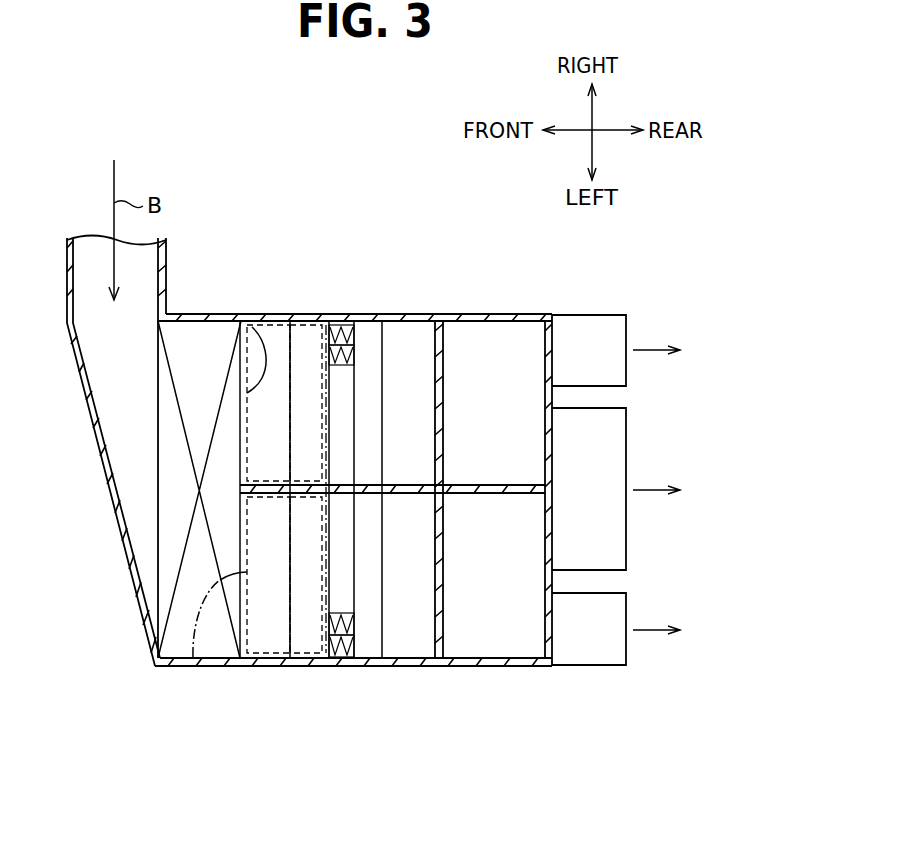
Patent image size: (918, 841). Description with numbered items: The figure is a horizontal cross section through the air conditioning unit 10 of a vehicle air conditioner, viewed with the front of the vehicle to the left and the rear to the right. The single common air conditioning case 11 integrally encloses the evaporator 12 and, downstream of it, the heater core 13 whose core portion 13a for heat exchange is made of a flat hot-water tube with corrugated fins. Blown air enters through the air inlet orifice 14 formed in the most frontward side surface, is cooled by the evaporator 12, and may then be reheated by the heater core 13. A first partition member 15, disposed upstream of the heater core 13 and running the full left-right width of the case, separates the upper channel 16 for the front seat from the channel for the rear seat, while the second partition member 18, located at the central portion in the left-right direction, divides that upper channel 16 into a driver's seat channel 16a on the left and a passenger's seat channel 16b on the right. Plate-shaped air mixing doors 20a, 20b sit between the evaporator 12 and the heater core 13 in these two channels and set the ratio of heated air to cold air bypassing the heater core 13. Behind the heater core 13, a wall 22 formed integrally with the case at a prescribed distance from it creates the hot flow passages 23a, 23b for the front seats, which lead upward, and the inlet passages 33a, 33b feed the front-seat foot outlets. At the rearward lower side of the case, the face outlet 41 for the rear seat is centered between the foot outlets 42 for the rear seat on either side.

The air conditioning unit 10 is at (384, 672).
The air conditioning case 11 is at (433, 660).
The evaporator 12 is at (185, 342).
The heater core 13 is at (360, 345).
The core portion 13a is at (337, 393).
The air inlet orifice 14 is at (117, 323).
The first partition member 15 is at (290, 377).
The upper channel for the front seat 16 is at (301, 564).
The driver's seat channel 16a is at (268, 612).
The passenger's seat channel 16b is at (267, 447).
The second partition member 18 is at (508, 415).
The air mixing door for the driver's seat 20a is at (194, 657).
The air mixing door for the passenger's seat 20b is at (252, 325).
The wall 22 is at (453, 540).
The hot flow passage for the front seats 23a is at (408, 585).
The hot flow passage for the front seats 23b is at (395, 487).
The inlet passage of the foot outlet for the front seats 33a is at (485, 612).
The inlet passage of the foot outlet for the front seats 33b is at (513, 407).
The face outlet for the rear seat 41 is at (613, 532).
The foot outlet for the rear seat 42 is at (613, 375).